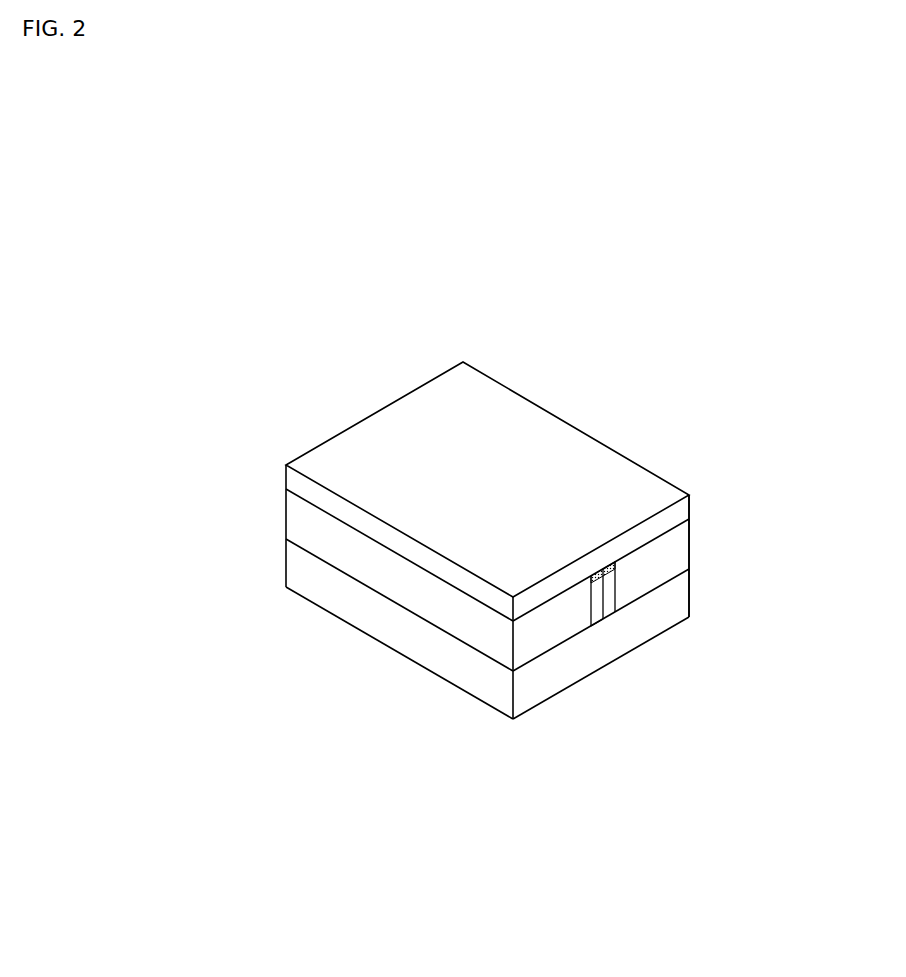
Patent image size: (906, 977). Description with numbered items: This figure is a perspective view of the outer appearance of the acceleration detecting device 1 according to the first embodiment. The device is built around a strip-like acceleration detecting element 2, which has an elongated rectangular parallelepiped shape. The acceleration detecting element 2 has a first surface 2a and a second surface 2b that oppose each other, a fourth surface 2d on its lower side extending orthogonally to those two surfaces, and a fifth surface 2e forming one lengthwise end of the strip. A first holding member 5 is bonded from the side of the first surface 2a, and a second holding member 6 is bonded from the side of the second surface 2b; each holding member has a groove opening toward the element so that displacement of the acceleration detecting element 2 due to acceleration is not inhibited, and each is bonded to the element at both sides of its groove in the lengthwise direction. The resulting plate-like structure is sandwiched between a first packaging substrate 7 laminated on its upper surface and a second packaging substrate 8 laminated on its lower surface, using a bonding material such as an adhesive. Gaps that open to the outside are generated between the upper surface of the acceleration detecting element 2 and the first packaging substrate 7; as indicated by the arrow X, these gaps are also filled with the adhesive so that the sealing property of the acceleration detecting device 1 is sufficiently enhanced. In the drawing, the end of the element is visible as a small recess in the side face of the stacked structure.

The acceleration detecting device 1 is at (286, 360).
The acceleration detecting element 2 is at (622, 596).
The first surface 2a is at (611, 610).
The second surface 2b is at (599, 625).
The fourth surface 2d is at (606, 616).
The fifth surface 2e is at (597, 583).
The arrow X is at (608, 560).
The first holding member 5 is at (692, 538).
The second holding member 6 is at (333, 566).
The first packaging substrate 7 is at (507, 385).
The second packaging substrate 8 is at (452, 683).